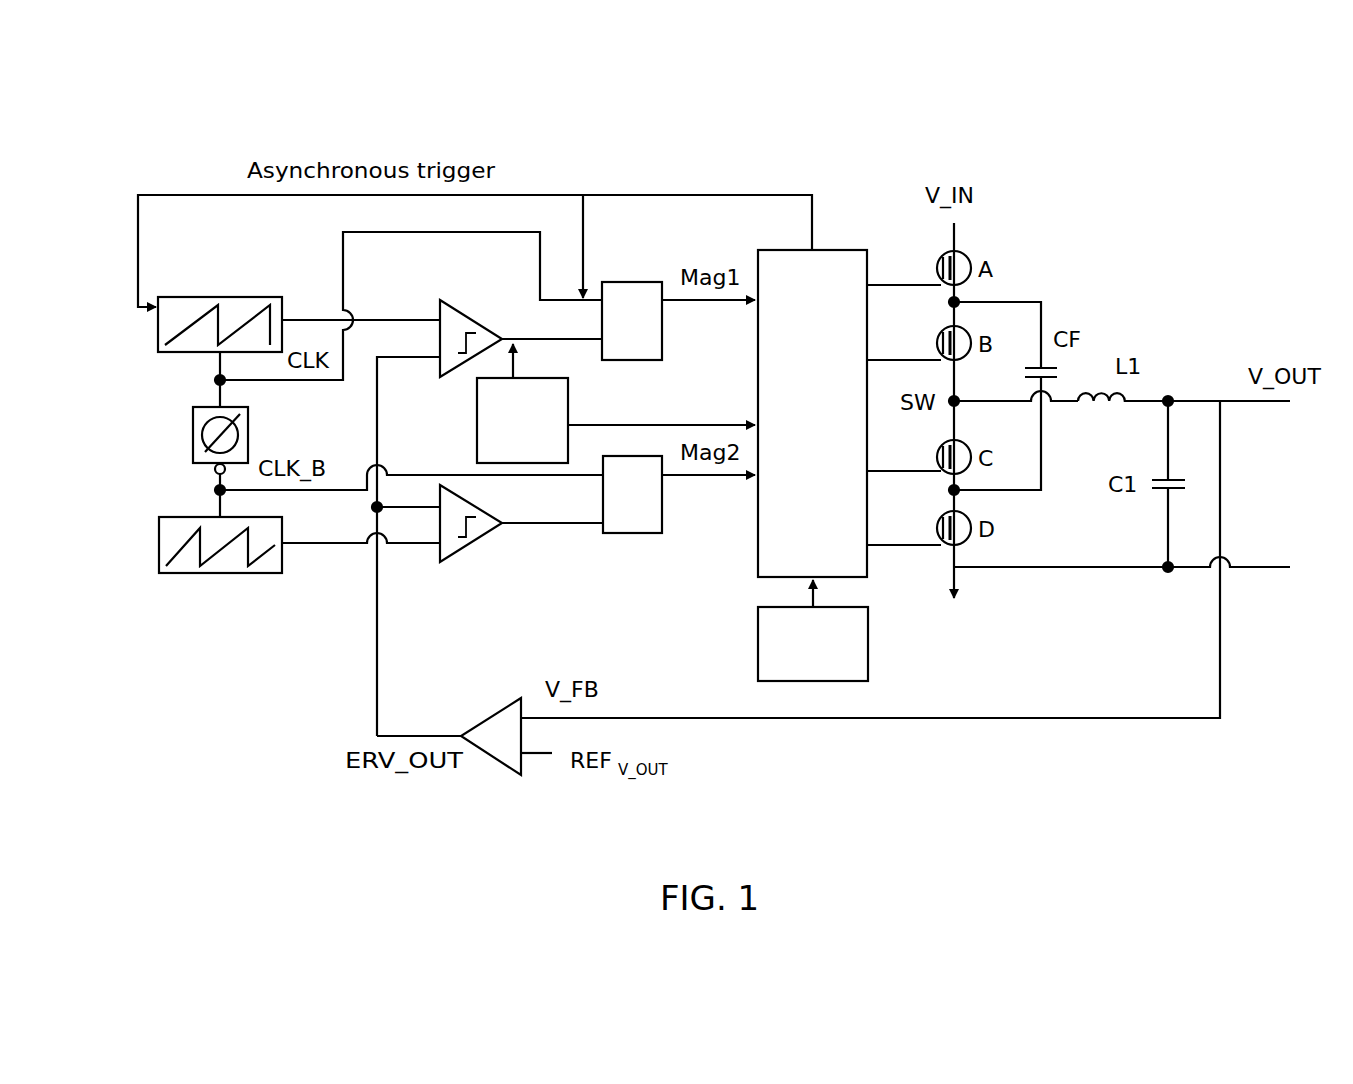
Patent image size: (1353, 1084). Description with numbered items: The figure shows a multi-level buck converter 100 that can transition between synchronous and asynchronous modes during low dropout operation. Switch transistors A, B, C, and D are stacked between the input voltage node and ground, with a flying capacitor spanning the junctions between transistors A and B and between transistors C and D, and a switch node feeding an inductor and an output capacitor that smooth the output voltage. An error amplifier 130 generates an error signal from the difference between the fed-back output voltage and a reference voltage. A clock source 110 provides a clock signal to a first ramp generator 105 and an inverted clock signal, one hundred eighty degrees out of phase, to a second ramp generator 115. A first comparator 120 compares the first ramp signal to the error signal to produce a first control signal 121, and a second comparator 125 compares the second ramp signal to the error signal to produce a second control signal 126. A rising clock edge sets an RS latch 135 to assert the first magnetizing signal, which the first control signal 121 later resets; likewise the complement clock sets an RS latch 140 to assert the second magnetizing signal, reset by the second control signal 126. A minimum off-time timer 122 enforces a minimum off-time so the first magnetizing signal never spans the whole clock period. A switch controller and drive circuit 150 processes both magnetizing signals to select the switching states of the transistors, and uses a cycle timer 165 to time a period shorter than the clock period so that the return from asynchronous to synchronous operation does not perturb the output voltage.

The switching voltage regulator 100 is at (630, 148).
The first ramp generator 105 is at (158, 335).
The clock source 110 is at (193, 435).
The second ramp generator 115 is at (159, 545).
The first comparator 120 is at (470, 318).
The first control signal 121 is at (555, 341).
The minimum off-time timer 122 is at (477, 425).
The second comparator 125 is at (456, 566).
The second control signal 126 is at (545, 525).
The error amplifier 130 is at (486, 776).
The RS latch 135 is at (628, 282).
The RS latch 140 is at (630, 533).
The switch controller and drive circuit 150 is at (758, 385).
The cycle timer 165 is at (758, 649).